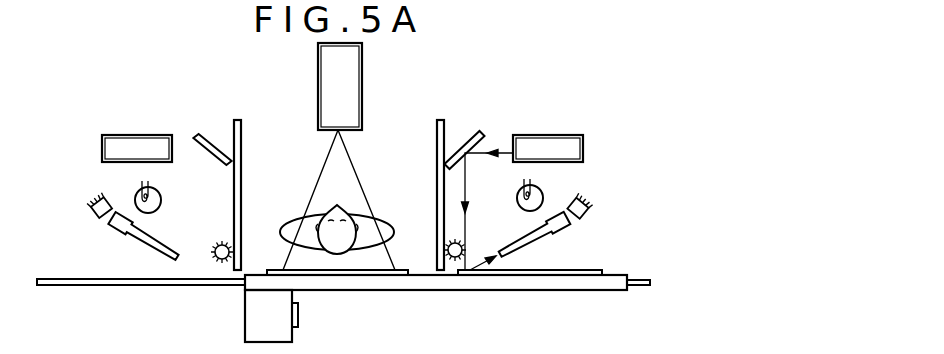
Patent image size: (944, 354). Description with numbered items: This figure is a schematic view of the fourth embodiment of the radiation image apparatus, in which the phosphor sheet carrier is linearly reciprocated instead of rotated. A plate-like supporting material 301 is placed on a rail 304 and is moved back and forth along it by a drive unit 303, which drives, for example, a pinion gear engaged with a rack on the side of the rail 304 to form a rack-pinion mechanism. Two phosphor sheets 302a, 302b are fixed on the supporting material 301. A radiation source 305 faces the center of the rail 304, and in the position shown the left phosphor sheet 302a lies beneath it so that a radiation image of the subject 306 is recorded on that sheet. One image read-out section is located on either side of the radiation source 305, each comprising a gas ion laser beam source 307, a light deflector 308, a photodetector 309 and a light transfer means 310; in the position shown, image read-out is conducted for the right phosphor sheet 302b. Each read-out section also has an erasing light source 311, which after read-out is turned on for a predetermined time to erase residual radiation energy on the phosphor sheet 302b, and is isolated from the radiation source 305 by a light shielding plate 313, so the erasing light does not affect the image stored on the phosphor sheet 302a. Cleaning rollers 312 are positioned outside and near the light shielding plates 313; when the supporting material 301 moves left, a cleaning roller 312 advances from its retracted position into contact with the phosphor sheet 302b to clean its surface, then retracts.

The supporting material 301 is at (570, 287).
The phosphor sheet 302a is at (377, 280).
The phosphor sheet 302b is at (602, 270).
The drive unit 303 is at (260, 328).
The rail 304 is at (642, 287).
The radiation source 305 is at (363, 65).
The patient 306 is at (387, 224).
The gas ion laser beam source 307 is at (133, 134).
The light deflector 308 is at (208, 132).
The photodetector 309 is at (101, 232).
The light transfer means 310 is at (143, 248).
The erasing light source 311 is at (135, 197).
The cleaning roller 312 is at (222, 241).
The light shielding plate 313 is at (238, 120).